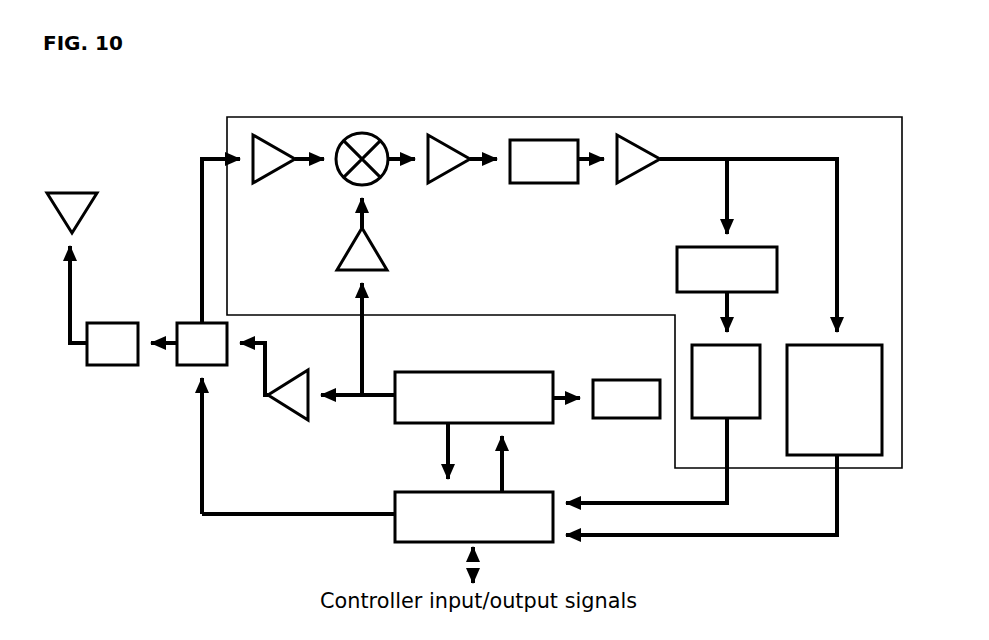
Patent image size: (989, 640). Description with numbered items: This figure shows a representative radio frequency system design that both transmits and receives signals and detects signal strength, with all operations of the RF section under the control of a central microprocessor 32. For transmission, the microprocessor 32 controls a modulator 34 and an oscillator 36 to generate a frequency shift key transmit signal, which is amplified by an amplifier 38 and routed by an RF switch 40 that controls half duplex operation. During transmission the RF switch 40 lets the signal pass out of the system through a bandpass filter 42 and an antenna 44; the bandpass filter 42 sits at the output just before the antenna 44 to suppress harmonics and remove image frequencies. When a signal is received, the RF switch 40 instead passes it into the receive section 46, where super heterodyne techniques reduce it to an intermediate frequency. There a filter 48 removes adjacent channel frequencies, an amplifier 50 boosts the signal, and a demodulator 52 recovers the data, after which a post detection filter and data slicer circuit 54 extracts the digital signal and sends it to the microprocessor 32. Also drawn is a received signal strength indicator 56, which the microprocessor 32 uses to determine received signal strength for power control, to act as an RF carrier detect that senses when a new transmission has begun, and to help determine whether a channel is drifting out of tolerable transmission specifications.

The central microprocessor 32 is at (425, 521).
The modulator 34 is at (425, 399).
The oscillator 36 is at (630, 400).
The amplifier 38 is at (290, 404).
The RF switch 40 is at (201, 341).
The bandpass filter 42 is at (112, 339).
The antenna 44 is at (79, 206).
The receive section 46 is at (220, 119).
The filter 48 is at (545, 163).
The amplifier 50 is at (632, 166).
The demodulator 52 is at (705, 271).
The post detection filter and data slicer circuit 54 is at (719, 393).
The received signal strength indicator (RSSI) 56 is at (841, 432).